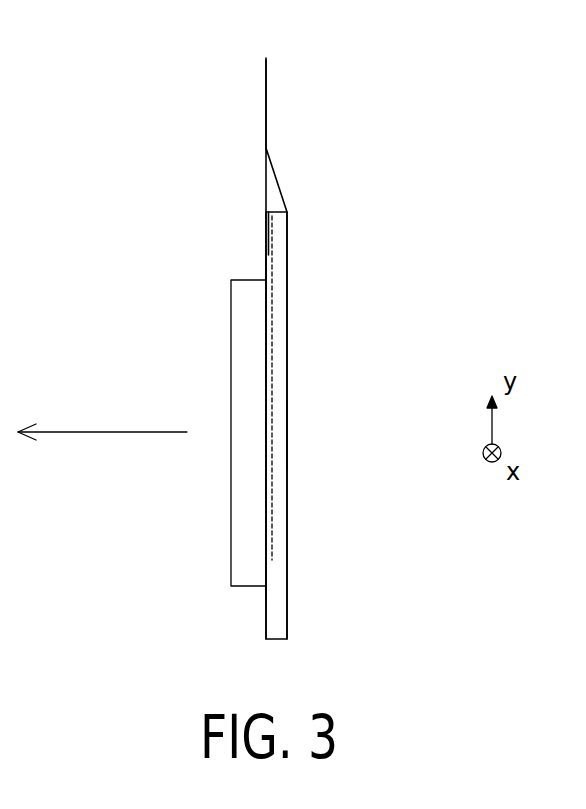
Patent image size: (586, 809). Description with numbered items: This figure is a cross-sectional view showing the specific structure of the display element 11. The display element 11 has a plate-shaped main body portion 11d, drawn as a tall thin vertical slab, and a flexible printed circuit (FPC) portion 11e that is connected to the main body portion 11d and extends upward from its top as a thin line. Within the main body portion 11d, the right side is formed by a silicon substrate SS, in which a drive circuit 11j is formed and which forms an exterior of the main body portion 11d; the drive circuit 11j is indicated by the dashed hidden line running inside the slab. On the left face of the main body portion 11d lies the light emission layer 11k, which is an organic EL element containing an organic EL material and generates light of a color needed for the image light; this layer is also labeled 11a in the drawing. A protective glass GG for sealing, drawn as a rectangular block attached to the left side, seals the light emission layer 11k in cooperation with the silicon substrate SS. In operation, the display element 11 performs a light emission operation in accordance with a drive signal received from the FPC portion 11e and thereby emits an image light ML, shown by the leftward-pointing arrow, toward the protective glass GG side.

The display element 11 is at (333, 112).
The flexible printed circuit (FPC) portion 11e is at (265, 116).
The main body portion 11d is at (283, 328).
The light emission layer 11k is at (267, 368).
The flank face (alternate designation) 11a is at (165, 430).
The silicon substrate SS is at (287, 435).
The drive circuit 11j is at (275, 492).
The protective glass GG is at (250, 482).
The image light ML is at (75, 440).